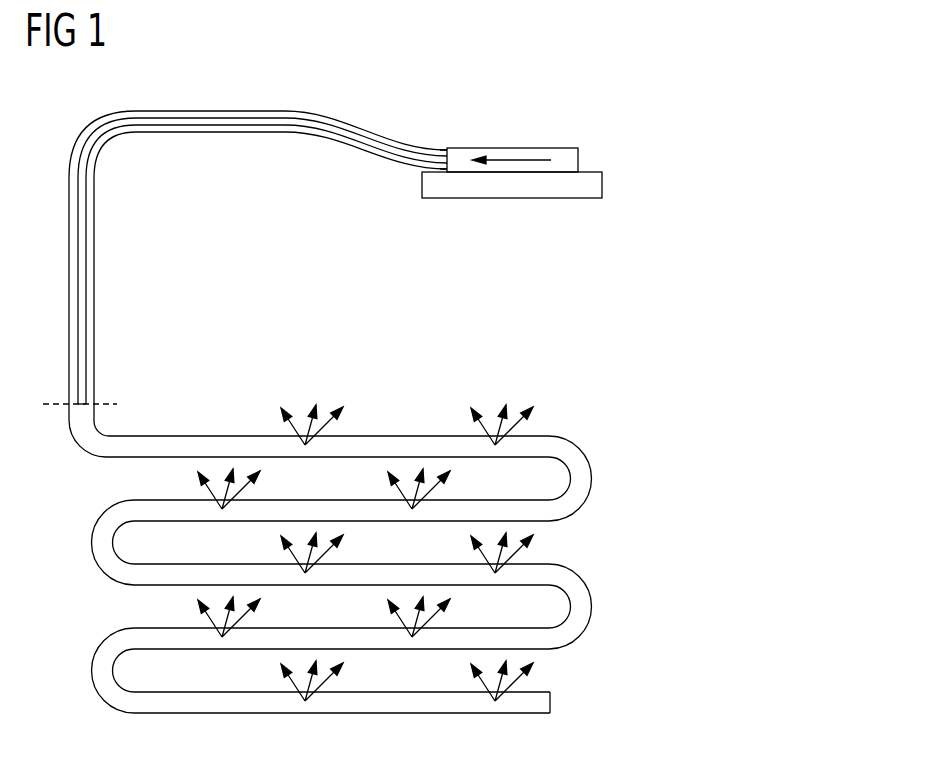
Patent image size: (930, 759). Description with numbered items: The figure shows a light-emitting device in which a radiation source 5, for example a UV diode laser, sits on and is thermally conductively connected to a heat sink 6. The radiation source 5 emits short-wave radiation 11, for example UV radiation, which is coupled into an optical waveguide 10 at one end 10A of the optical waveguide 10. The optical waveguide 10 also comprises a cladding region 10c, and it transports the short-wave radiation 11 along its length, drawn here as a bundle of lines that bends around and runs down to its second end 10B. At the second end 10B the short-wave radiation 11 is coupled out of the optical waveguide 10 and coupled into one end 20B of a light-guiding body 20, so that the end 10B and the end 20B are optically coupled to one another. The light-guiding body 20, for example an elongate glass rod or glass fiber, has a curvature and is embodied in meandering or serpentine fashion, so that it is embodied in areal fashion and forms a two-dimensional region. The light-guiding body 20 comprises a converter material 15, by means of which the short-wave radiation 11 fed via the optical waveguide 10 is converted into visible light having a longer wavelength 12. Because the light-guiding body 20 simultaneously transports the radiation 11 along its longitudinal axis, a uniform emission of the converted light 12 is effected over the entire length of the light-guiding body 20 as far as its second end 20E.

The radiation source 5 is at (565, 157).
The heat sink 6 is at (515, 188).
The optical waveguide 10 is at (223, 126).
The end of the optical waveguide 10A is at (438, 157).
The second end of the optical waveguide 10B is at (69, 404).
The cladding region 10c is at (99, 130).
The short-wave radiation 11 is at (514, 159).
The visible light having a longer wavelength 12 is at (483, 428).
The converter material 15 is at (165, 443).
The light-guiding body 20 is at (585, 478).
The end of the light-guiding body 20B is at (69, 408).
The second end of the light-guiding body 20E is at (543, 701).